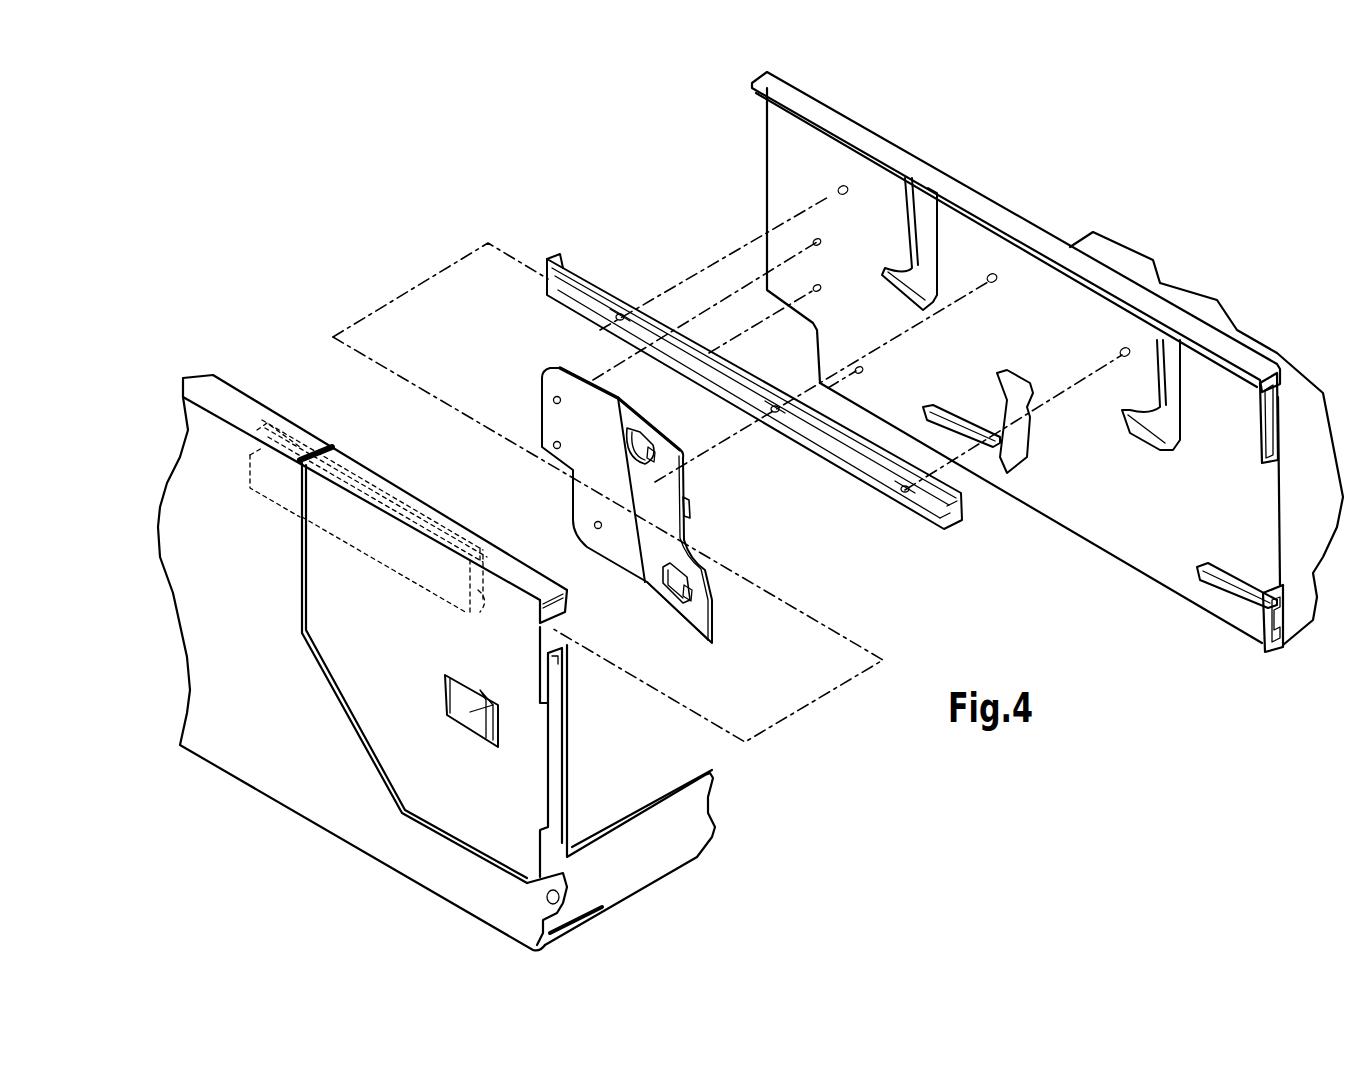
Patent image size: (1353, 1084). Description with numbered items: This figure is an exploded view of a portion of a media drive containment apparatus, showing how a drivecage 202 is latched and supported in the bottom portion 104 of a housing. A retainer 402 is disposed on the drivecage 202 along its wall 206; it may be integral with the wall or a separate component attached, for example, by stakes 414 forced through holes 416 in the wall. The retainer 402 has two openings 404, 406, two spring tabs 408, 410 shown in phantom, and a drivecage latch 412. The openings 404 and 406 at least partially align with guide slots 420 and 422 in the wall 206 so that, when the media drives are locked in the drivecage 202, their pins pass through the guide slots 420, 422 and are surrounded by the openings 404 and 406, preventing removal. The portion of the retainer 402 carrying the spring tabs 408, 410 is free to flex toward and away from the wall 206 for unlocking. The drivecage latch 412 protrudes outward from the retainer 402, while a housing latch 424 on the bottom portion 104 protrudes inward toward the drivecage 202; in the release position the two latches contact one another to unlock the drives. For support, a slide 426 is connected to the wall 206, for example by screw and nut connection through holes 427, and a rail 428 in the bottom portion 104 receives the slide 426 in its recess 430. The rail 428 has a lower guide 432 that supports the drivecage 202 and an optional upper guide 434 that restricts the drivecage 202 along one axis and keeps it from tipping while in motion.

The bottom portion 104 is at (128, 490).
The drivecage 202 is at (1075, 180).
The wall 206 is at (775, 152).
The retainer 402 is at (578, 392).
The opening 404 is at (635, 440).
The opening 406 is at (687, 548).
The spring tab 408 is at (657, 452).
The spring tab 410 is at (665, 585).
The drivecage latch 412 is at (690, 508).
The stakes 414 is at (594, 525).
The holes 416 is at (859, 366).
The guide slot 420 is at (928, 210).
The guide slot 422 is at (1018, 450).
The housing latch 424 is at (485, 710).
The slide 426 is at (557, 256).
The holes 427 is at (847, 187).
The rail 428 is at (250, 467).
The recess 430 is at (483, 590).
The lower guide 432 is at (487, 607).
The upper guide 434 is at (480, 535).